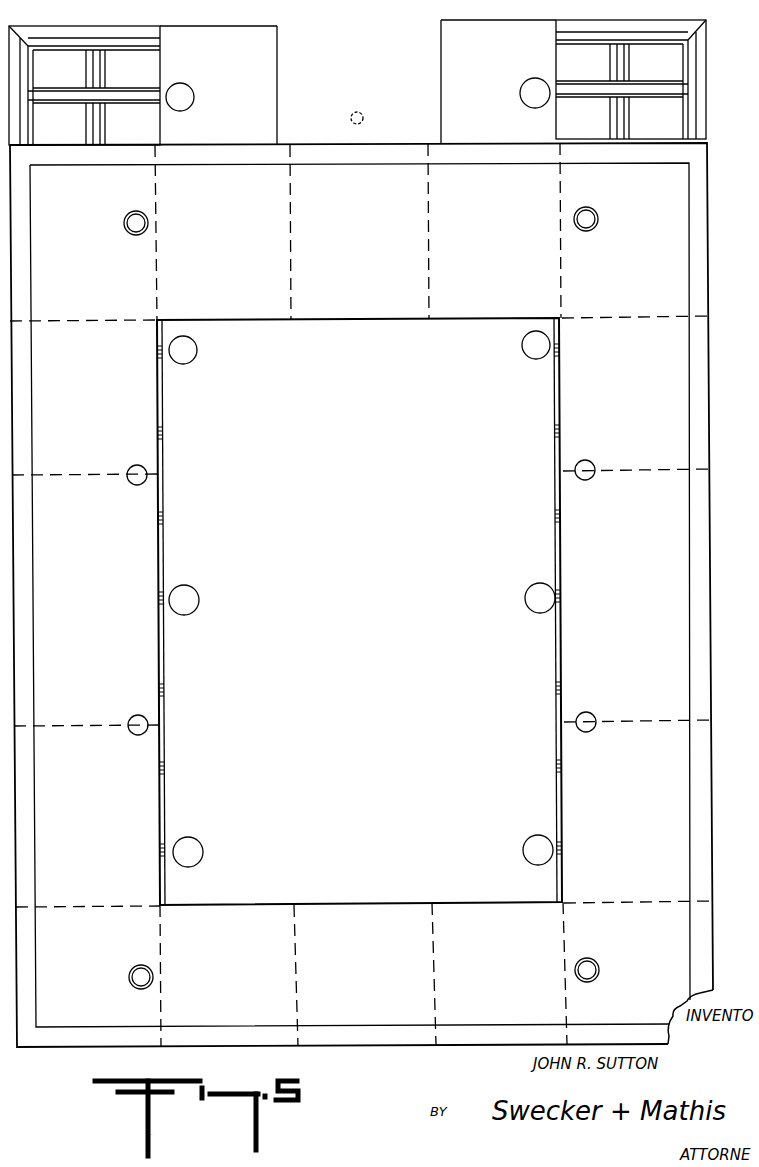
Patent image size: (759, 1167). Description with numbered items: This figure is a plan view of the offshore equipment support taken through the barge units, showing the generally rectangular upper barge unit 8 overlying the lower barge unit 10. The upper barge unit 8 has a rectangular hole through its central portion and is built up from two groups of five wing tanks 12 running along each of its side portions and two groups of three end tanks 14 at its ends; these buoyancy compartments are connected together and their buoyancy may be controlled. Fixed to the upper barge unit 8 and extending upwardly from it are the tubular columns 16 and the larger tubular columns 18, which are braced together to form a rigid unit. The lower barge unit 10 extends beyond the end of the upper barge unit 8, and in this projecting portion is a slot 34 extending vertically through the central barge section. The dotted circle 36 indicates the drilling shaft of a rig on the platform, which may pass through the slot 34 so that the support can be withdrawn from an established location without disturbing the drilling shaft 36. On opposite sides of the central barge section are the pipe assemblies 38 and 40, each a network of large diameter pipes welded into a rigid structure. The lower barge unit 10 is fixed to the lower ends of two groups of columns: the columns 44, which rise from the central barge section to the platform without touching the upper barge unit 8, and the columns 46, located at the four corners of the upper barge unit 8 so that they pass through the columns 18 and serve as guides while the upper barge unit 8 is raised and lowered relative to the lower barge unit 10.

The upper barge unit 8 is at (686, 650).
The lower barge unit 10 is at (374, 562).
The wing tanks 12 is at (104, 278).
The end tanks 14 is at (235, 243).
The tubular columns 16 is at (133, 485).
The tubular columns 18 is at (127, 232).
The slot 34 is at (441, 90).
The drilling shaft 36 is at (357, 112).
The pipe assembly 38 is at (46, 26).
The pipe assembly 40 is at (656, 22).
The tubular columns 44 is at (194, 96).
The tubular columns 46 is at (128, 218).